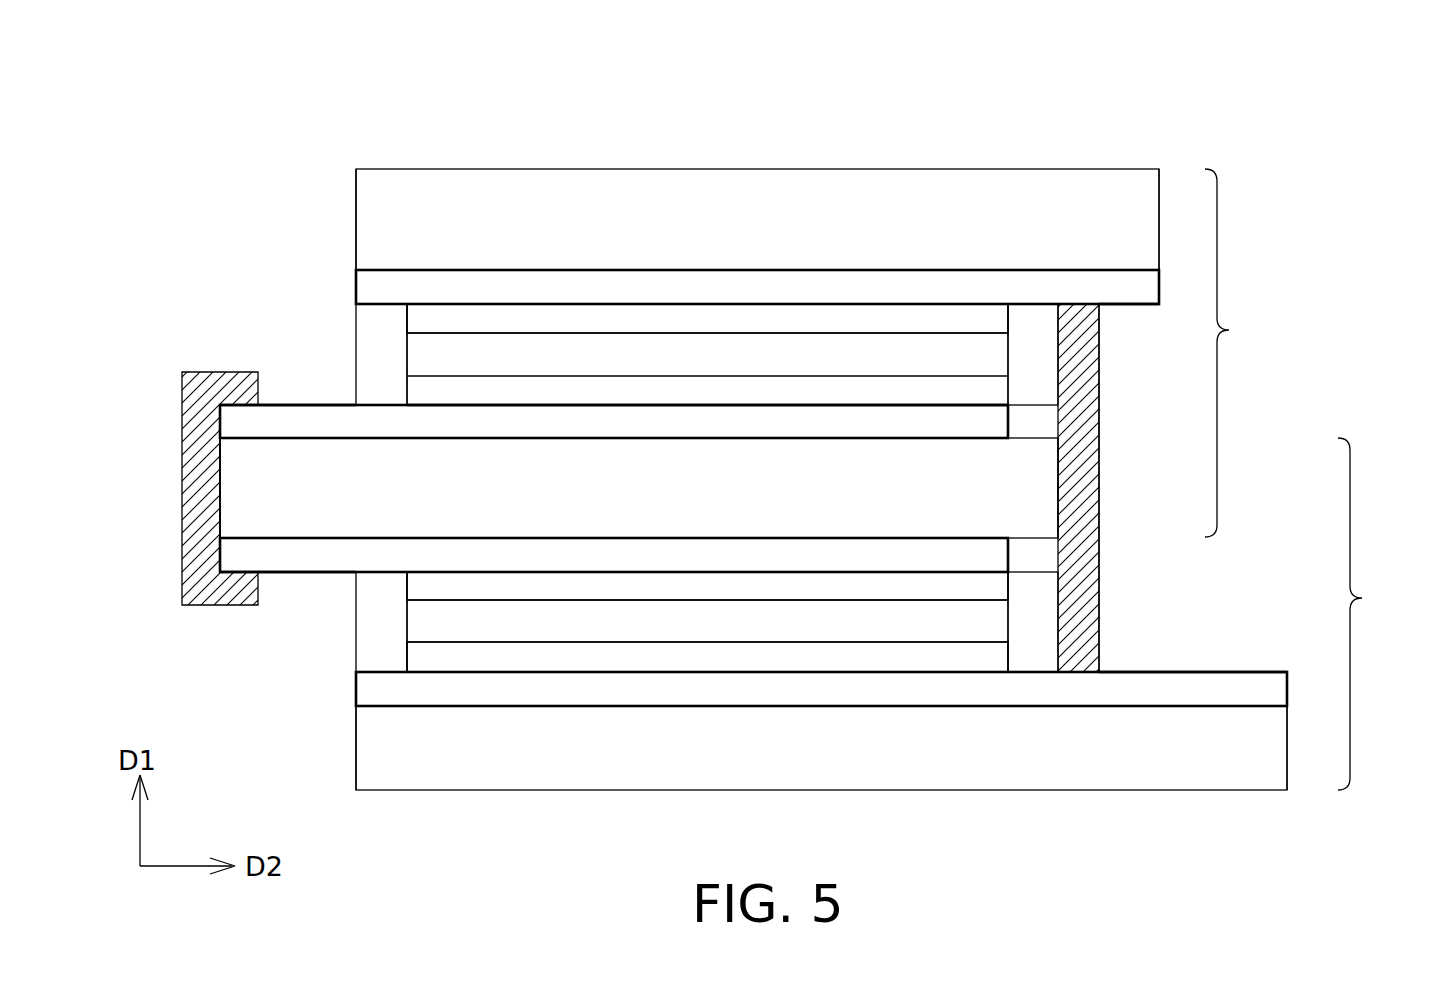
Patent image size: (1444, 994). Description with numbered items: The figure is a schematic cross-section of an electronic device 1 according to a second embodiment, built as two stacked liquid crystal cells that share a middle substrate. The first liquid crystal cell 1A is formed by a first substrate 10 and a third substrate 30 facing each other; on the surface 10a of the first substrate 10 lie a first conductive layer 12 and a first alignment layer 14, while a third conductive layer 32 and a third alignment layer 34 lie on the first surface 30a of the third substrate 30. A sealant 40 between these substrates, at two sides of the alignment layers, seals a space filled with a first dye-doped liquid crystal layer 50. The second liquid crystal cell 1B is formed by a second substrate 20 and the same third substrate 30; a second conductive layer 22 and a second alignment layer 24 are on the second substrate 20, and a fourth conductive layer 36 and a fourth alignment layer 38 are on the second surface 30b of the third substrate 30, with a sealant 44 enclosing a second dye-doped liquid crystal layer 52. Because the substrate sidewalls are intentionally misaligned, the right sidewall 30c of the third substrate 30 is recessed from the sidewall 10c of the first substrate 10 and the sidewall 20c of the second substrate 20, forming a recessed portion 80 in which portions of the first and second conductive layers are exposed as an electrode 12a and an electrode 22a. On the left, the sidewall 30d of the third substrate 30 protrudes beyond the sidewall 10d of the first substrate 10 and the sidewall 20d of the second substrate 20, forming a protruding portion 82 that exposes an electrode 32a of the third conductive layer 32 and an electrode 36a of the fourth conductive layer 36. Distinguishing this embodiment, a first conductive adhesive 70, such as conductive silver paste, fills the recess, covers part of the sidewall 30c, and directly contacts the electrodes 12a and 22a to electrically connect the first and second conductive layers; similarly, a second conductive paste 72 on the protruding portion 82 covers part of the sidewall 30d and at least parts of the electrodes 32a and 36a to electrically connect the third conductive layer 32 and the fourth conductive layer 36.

The electronic device 1 is at (1296, 125).
The first liquid crystal cell 1A is at (1373, 614).
The second liquid crystal cell 1B is at (1240, 353).
The first substrate 10 is at (694, 762).
The surface of first substrate 10a is at (390, 706).
The sidewall of first substrate 10c is at (1287, 740).
The sidewall of first substrate 10d is at (356, 762).
The first conductive layer 12 is at (380, 697).
The electrode 12a is at (1287, 660).
The first alignment layer 14 is at (425, 648).
The second substrate 20 is at (694, 224).
The sidewall of second substrate 20c is at (1159, 255).
The sidewall of second substrate 20d is at (356, 218).
The second conductive layer 22 is at (380, 289).
The electrode 22a is at (1160, 312).
The second alignment layer 24 is at (425, 323).
The third substrate 30 is at (694, 497).
The first surface of third substrate 30a is at (407, 538).
The second surface of third substrate 30b is at (407, 438).
The sidewall of third substrate 30c is at (1058, 485).
The sidewall of third substrate 30d is at (220, 490).
The third conductive layer 32 is at (242, 553).
The electrode 32a is at (356, 612).
The third alignment layer 34 is at (555, 590).
The fourth conductive layer 36 is at (245, 426).
The electrode 36a is at (356, 360).
The fourth alignment layer 38 is at (503, 393).
The sealant 40 is at (397, 634).
The sealant 44 is at (397, 366).
The first dye-doped liquid crystal layer 50 is at (694, 634).
The second dye-doped liquid crystal layer 52 is at (694, 366).
The first conductive adhesive 70 is at (1072, 483).
The second conductive paste 72 is at (210, 483).
The recessed portion 80 is at (1127, 522).
The protruding portion 82 is at (155, 370).